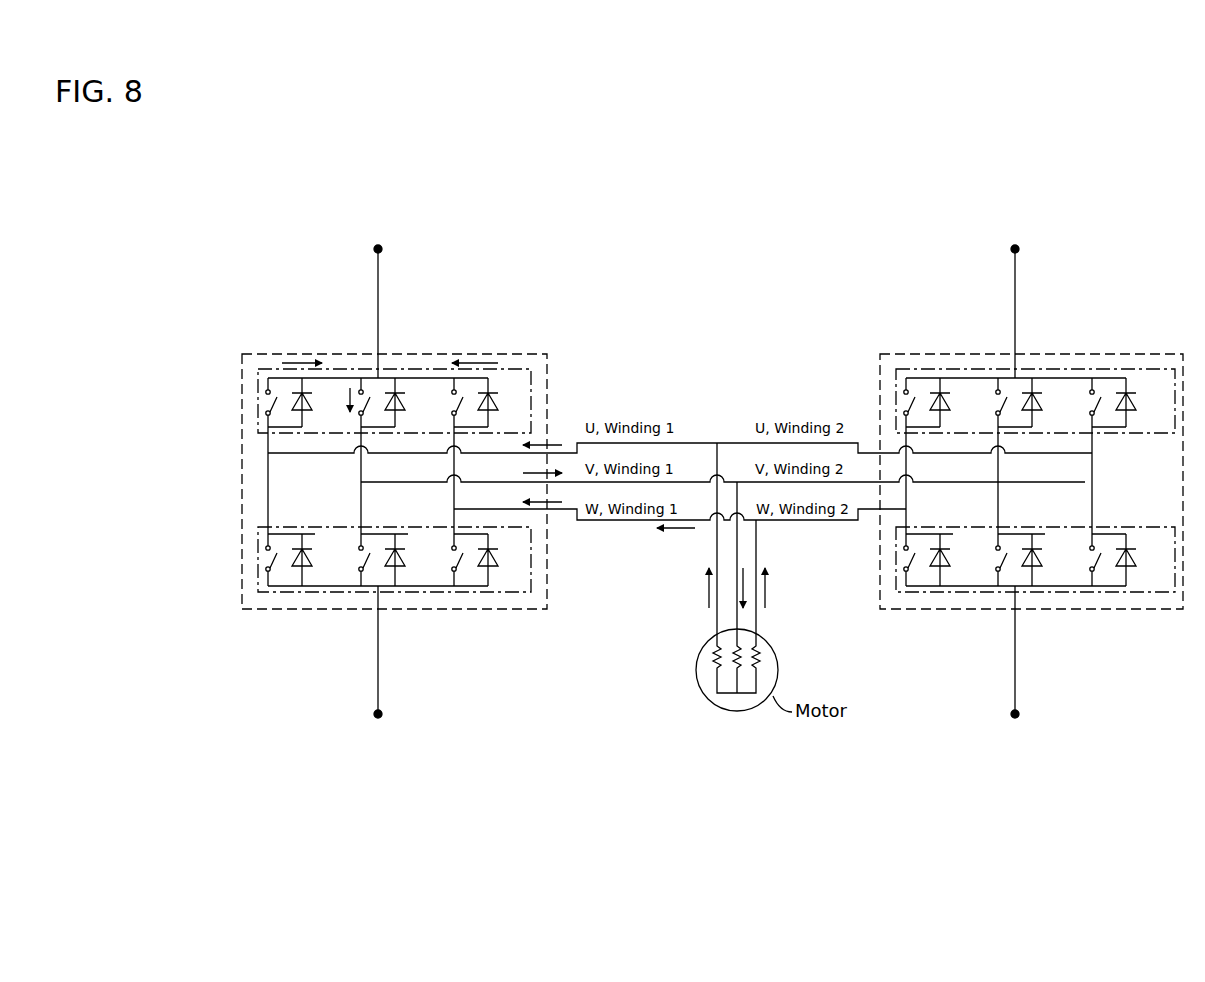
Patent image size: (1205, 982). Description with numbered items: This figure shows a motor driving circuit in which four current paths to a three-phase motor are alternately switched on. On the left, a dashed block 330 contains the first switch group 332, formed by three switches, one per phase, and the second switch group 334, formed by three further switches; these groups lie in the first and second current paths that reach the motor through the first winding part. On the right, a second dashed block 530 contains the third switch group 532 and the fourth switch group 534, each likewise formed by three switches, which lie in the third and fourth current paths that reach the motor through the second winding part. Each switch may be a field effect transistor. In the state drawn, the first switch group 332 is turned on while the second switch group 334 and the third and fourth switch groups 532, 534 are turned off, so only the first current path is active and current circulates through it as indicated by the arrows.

The first inverter 330 is at (328, 354).
The first switch group 332 is at (527, 354).
The second switch group 334 is at (462, 592).
The second inverter 530 is at (1092, 354).
The third switch group 532 is at (960, 354).
The fourth switch group 534 is at (962, 592).